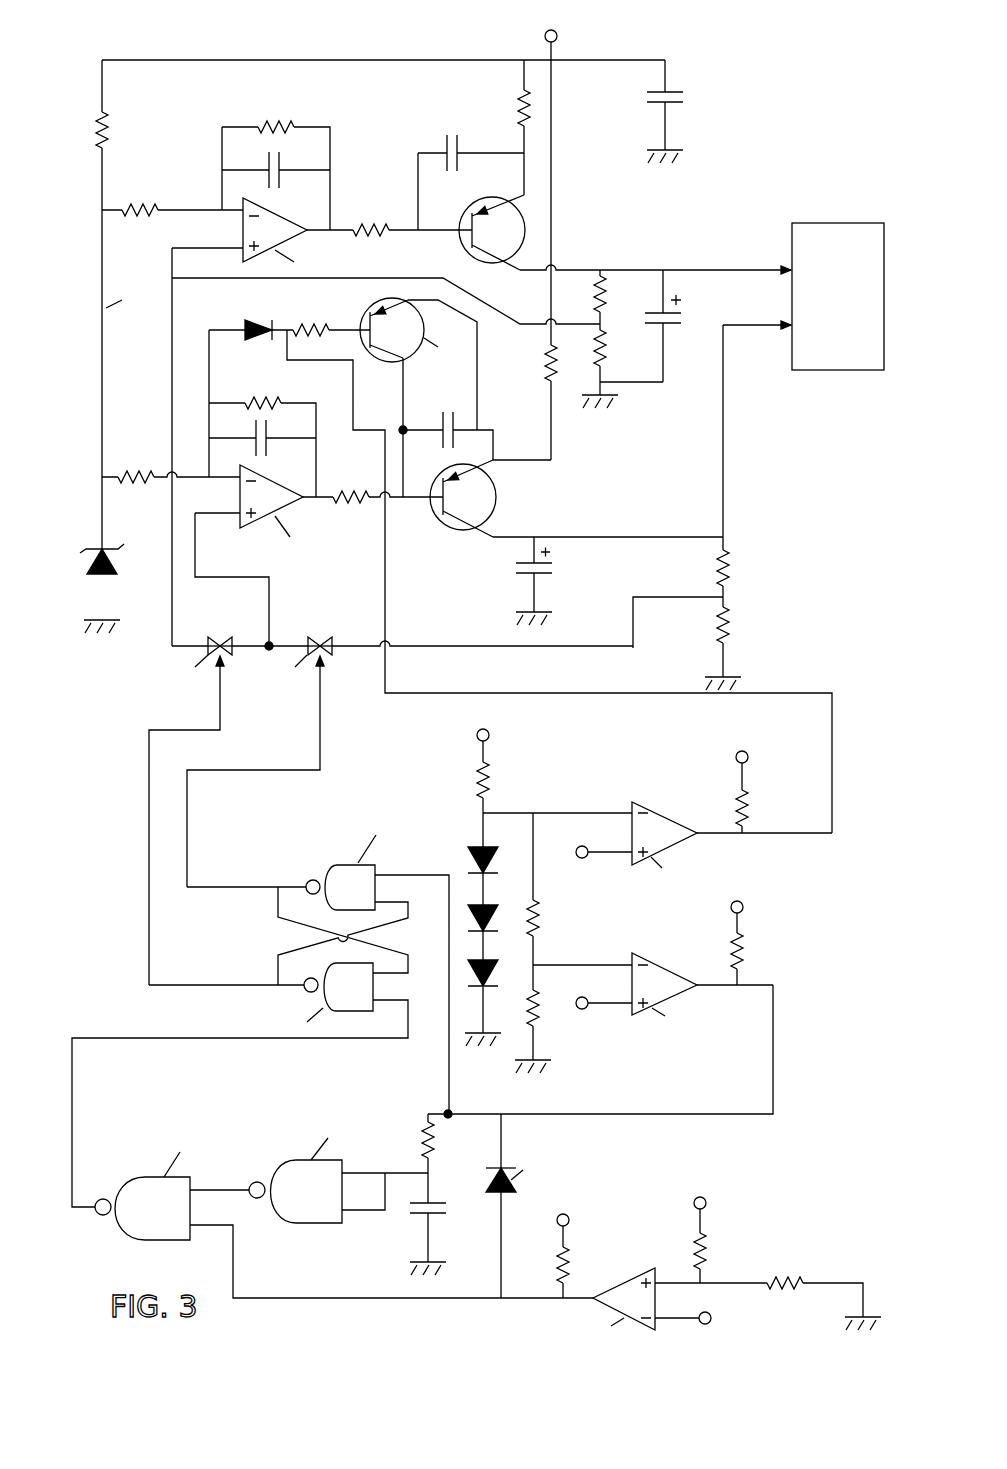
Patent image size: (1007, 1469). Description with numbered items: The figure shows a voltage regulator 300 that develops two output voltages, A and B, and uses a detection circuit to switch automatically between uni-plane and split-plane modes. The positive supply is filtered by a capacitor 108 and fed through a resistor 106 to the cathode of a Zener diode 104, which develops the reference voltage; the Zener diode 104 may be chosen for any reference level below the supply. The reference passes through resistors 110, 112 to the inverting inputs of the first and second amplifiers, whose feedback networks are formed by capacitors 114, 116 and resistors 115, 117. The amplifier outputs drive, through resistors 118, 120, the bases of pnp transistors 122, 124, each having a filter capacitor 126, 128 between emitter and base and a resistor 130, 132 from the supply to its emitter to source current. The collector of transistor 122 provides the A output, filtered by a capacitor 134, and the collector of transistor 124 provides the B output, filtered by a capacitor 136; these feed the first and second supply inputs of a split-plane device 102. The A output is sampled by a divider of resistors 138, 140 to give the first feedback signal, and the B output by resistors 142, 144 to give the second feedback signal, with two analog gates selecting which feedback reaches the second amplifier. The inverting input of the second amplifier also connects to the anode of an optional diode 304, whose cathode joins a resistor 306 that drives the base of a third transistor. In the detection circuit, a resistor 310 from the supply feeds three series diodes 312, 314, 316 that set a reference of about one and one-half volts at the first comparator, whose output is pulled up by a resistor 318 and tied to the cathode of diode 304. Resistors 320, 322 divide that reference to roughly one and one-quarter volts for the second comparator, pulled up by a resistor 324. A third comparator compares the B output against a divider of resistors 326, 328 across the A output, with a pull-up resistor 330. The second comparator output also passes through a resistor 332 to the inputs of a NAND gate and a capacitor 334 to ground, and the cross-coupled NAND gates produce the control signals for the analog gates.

The split-plane device 102 is at (832, 222).
The Zener diode 104 is at (82, 549).
The resistor 106 is at (116, 124).
The capacitor 108 is at (681, 92).
The resistor 110 is at (131, 208).
The resistor 112 is at (144, 466).
The capacitor 114 is at (283, 183).
The resistor 115 is at (288, 125).
The capacitor 116 is at (270, 440).
The resistor 117 is at (274, 400).
The resistor 118 is at (367, 227).
The resistor 120 is at (343, 479).
The transistor 122 is at (466, 247).
The transistor 124 is at (496, 465).
The filter capacitor 126 is at (446, 137).
The filter capacitor 128 is at (446, 414).
The resistor 130 is at (519, 102).
The resistor 132 is at (547, 356).
The capacitor 134 is at (673, 322).
The capacitor 136 is at (549, 577).
The resistor 138 is at (606, 280).
The resistor 140 is at (605, 350).
The resistor 142 is at (731, 568).
The resistor 144 is at (731, 626).
The voltage regulator 300 is at (461, 675).
The diode 304 is at (254, 340).
The resistor 306 is at (323, 325).
The resistor 310 is at (491, 767).
The diode 312 is at (487, 875).
The diode 314 is at (487, 933).
The diode 316 is at (487, 988).
The pull-up resistor 318 is at (749, 786).
The resistor 320 is at (540, 930).
The resistor 322 is at (541, 1025).
The pull-up resistor 324 is at (733, 946).
The resistor 326 is at (697, 1240).
The resistor 328 is at (772, 1282).
The pull-up resistor 330 is at (567, 1264).
The resistor 332 is at (423, 1140).
The capacitor 334 is at (438, 1217).